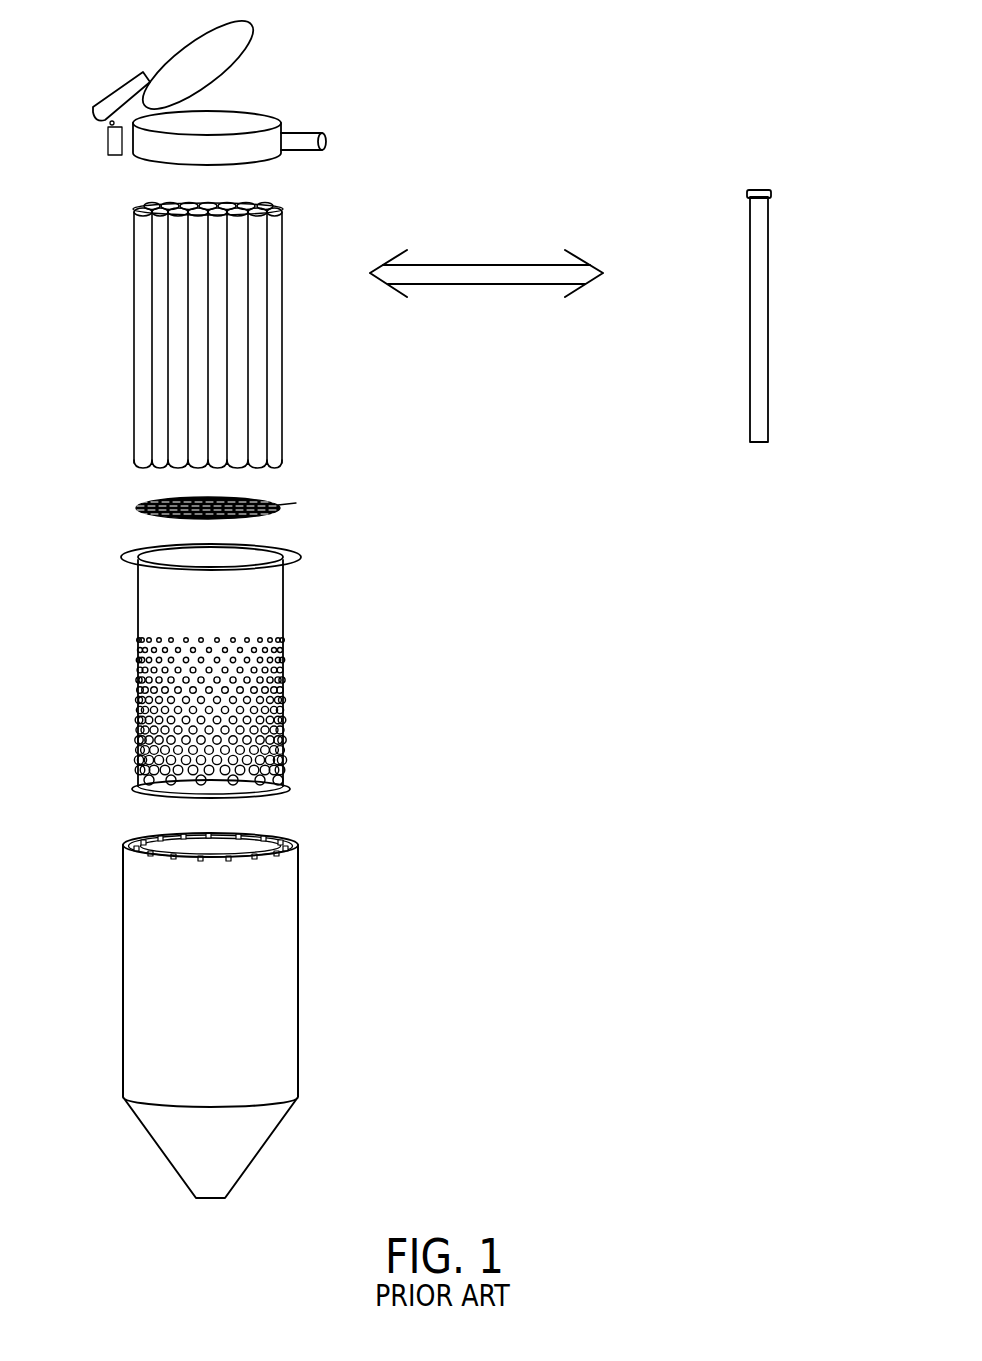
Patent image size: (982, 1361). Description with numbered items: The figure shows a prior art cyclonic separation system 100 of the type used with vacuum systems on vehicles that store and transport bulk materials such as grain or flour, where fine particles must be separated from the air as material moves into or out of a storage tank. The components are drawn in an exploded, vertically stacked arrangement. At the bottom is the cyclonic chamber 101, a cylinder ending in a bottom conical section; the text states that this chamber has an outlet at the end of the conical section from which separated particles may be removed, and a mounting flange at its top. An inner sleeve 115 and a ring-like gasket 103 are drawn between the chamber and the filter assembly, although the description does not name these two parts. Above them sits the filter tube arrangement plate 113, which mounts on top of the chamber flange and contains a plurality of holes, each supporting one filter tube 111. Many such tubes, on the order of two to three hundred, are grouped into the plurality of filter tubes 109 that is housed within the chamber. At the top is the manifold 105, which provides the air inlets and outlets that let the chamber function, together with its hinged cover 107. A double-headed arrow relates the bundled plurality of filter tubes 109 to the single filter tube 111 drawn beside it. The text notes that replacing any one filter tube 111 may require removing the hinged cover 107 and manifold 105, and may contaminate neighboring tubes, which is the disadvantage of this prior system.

The cyclonic separation system 100 is at (480, 89).
The cyclonic chamber 101 is at (300, 948).
The gasket ring 103 is at (124, 848).
The manifold 105 is at (265, 148).
The hinged cover 107 is at (248, 26).
The plurality of filter tubes 109 is at (273, 334).
The filter tube 111 is at (768, 253).
The filter tube arrangement plate 113 is at (153, 500).
The perforated basket 115 is at (283, 672).